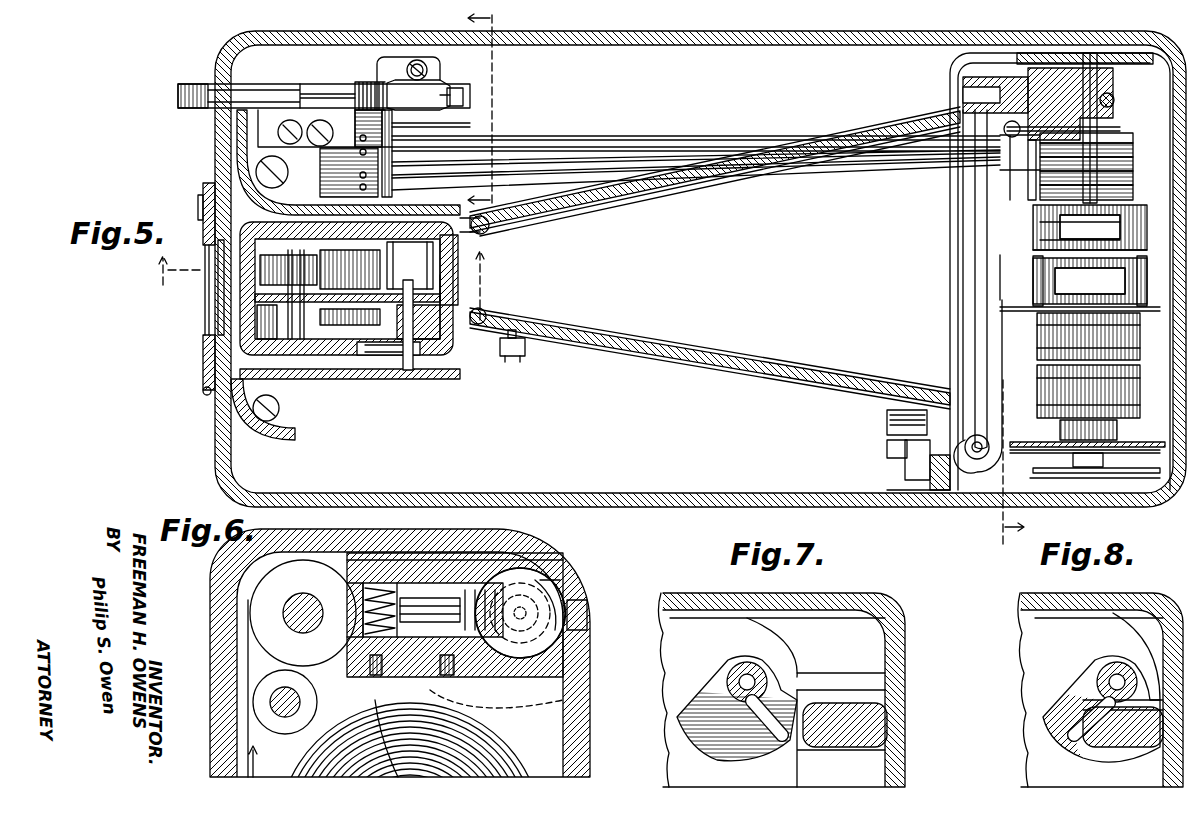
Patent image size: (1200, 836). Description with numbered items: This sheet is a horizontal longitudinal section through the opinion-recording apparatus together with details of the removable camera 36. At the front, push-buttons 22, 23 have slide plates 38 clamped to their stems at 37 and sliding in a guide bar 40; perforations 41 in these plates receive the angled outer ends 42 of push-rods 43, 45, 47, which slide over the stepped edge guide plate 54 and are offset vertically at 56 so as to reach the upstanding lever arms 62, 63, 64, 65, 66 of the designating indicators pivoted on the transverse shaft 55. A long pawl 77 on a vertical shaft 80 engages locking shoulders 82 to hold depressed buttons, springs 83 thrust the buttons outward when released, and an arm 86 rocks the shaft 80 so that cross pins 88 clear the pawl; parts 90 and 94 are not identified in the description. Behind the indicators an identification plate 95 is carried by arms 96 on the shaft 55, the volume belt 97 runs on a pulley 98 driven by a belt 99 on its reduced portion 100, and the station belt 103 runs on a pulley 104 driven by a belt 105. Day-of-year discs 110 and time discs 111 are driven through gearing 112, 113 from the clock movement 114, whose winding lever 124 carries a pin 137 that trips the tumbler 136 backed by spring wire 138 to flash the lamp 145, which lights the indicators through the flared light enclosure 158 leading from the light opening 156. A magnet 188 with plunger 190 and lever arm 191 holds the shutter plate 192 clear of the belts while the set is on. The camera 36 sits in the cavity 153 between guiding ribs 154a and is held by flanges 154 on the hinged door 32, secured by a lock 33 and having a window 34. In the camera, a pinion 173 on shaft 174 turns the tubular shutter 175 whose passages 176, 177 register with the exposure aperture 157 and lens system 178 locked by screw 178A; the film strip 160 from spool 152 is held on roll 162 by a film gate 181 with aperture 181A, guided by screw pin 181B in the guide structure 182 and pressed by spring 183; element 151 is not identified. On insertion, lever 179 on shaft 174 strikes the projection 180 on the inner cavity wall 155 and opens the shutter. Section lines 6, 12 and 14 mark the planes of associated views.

In FIG. 5, the push-button 22 is at (212, 82).
In FIG. 5, the push-button 23 is at (180, 92).
In FIG. 5, the hinged door 32 is at (205, 370).
In FIG. 5, the lock 33 is at (205, 218).
In FIG. 5, the window 34 is at (205, 290).
In FIG. 5, the camera 36 is at (232, 322).
In FIG. 6, the camera 36 is at (212, 714).
In FIG. 7, the camera 36 is at (688, 612).
In FIG. 8, the camera 36 is at (1045, 627).
In FIG. 5, the clamp 37 is at (288, 124).
In FIG. 5, the slide plates 38 is at (328, 132).
In FIG. 5, the guide bar 40 is at (275, 216).
In FIG. 5, the perforations 41 is at (357, 178).
In FIG. 5, the angled outer ends 42 is at (357, 160).
In FIG. 5, the top transmission rod 43 is at (652, 136).
In FIG. 5, the push-rod 45 is at (545, 160).
In FIG. 5, the push-wire 47 is at (625, 198).
In FIG. 5, the stepped edge guide plate 54 is at (420, 118).
In FIG. 5, the horizontal transverse shaft 55 is at (1095, 60).
In FIG. 5, the vertical offset 56 is at (500, 160).
In FIG. 5, the lever arm 62 is at (1120, 134).
In FIG. 5, the lever arm 63 is at (1125, 150).
In FIG. 5, the lever arm 64 is at (1125, 164).
In FIG. 5, the lever arm 65 is at (1125, 178).
In FIG. 5, the lever arm 66 is at (1130, 222).
In FIG. 5, the long pawl 77 is at (445, 85).
In FIG. 5, the vertical shaft 80 is at (430, 78).
In FIG. 5, the locking shoulders 82 is at (466, 88).
In FIG. 5, the springs 83 is at (362, 86).
In FIG. 5, the arm 86 is at (452, 104).
In FIG. 5, the cross pins 88 is at (417, 66).
In FIG. 5, the bracket 90 is at (505, 350).
In FIG. 5, the stop 94 is at (520, 360).
In FIG. 5, the identification plate 95 is at (1030, 180).
In FIG. 5, the arms 96 is at (1115, 98).
In FIG. 5, the volume indicator belt 97 is at (1045, 240).
In FIG. 5, the pulley 98 is at (1125, 190).
In FIG. 5, the belt 99 is at (1045, 222).
In FIG. 5, the reduced intermediate portion 100 is at (1135, 242).
In FIG. 5, the station indicator belt 103 is at (1000, 308).
In FIG. 5, the pulley 104 is at (1000, 262).
In FIG. 5, the belt 105 is at (1040, 272).
In FIG. 5, the indicator discs 110 is at (1045, 350).
In FIG. 5, the hour and minute counting discs 111 is at (1040, 380).
In FIG. 5, the gearing 112 is at (1062, 432).
In FIG. 5, the gearing 113 is at (1130, 456).
In FIG. 5, the clock movement 114 is at (1155, 470).
In FIG. 5, the solenoid lever 124 is at (890, 414).
In FIG. 5, the pivoted tumbler 136 is at (905, 470).
In FIG. 5, the pin 137 is at (890, 455).
In FIG. 5, the spring wire 138 is at (915, 490).
In FIG. 5, the lamp 145 is at (972, 212).
In FIG. 5, the gear 151 is at (330, 330).
In FIG. 6, the film spool 152 is at (378, 718).
In FIG. 5, the camera cavity 153 is at (345, 331).
In FIG. 5, the confining ribs 154 is at (222, 254).
In FIG. 5, the guiding ribs 154a is at (548, 222).
In FIG. 7, the guiding ribs 154a is at (872, 680).
In FIG. 7, the inner wall 155 is at (875, 652).
In FIG. 8, the inner wall 155 is at (1160, 612).
In FIG. 5, the light opening 156 is at (488, 234).
In FIG. 5, the exposure aperture 157 is at (440, 272).
In FIG. 6, the exposure aperture 157 is at (587, 615).
In FIG. 5, the flared light enclosure 158 is at (655, 358).
In FIG. 6, the film strip 160 is at (250, 656).
In FIG. 5, the supporting roll 162 is at (282, 262).
In FIG. 6, the supporting roll 162 is at (258, 598).
In FIG. 5, the pinion 173 is at (470, 318).
In FIG. 5, the shutter shaft 174 is at (410, 365).
In FIG. 6, the shutter shaft 174 is at (575, 590).
In FIG. 7, the shutter shaft 174 is at (752, 682).
In FIG. 8, the shutter shaft 174 is at (1117, 682).
In FIG. 5, the tubular shutter 175 is at (470, 290).
In FIG. 6, the tubular shutter 175 is at (560, 580).
In FIG. 5, the light passage 176 is at (450, 283).
In FIG. 6, the light passage 176 is at (545, 553).
In FIG. 6, the light passage 177 is at (515, 660).
In FIG. 6, the lens system 178 is at (445, 580).
In FIG. 6, the screw 178A is at (450, 680).
In FIG. 5, the lever 179 is at (370, 355).
In FIG. 6, the lever 179 is at (585, 690).
In FIG. 7, the lever 179 is at (790, 712).
In FIG. 8, the lever 179 is at (1085, 712).
In FIG. 7, the projection 180 is at (840, 735).
In FIG. 8, the projection 180 is at (1090, 728).
In FIG. 5, the film gate 181 is at (338, 262).
In FIG. 6, the film gate 181 is at (365, 678).
In FIG. 6, the aperture 181A is at (343, 615).
In FIG. 6, the screw pin 181B is at (340, 697).
In FIG. 6, the guide structure 182 is at (380, 553).
In FIG. 6, the spring 183 is at (350, 553).
In FIG. 5, the magnet 188 is at (960, 140).
In FIG. 5, the plunger 190 is at (975, 113).
In FIG. 5, the lever arm 191 is at (1120, 120).
In FIG. 5, the shutter plate 192 is at (1035, 260).
In FIG. 5, the section line 6 is at (317, 274).
In FIG. 5, the section line 12 is at (999, 467).
In FIG. 5, the section line 14 is at (492, 109).